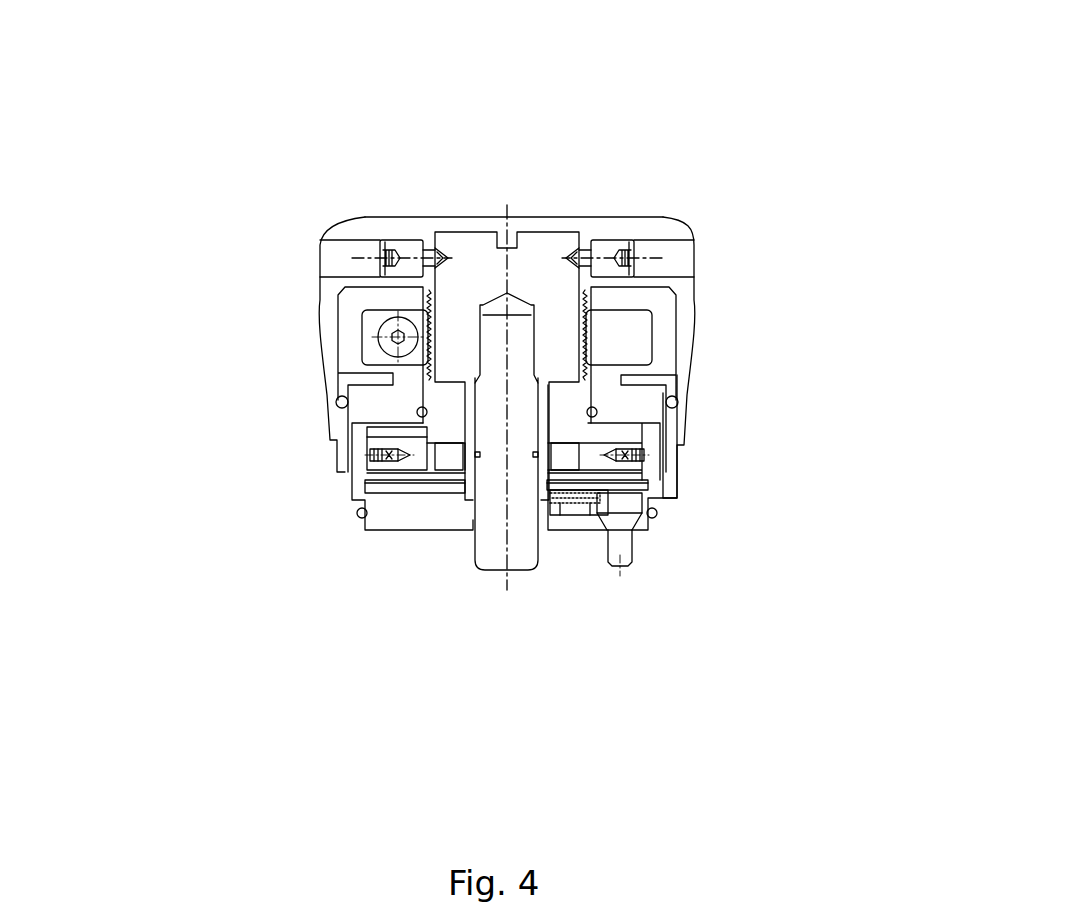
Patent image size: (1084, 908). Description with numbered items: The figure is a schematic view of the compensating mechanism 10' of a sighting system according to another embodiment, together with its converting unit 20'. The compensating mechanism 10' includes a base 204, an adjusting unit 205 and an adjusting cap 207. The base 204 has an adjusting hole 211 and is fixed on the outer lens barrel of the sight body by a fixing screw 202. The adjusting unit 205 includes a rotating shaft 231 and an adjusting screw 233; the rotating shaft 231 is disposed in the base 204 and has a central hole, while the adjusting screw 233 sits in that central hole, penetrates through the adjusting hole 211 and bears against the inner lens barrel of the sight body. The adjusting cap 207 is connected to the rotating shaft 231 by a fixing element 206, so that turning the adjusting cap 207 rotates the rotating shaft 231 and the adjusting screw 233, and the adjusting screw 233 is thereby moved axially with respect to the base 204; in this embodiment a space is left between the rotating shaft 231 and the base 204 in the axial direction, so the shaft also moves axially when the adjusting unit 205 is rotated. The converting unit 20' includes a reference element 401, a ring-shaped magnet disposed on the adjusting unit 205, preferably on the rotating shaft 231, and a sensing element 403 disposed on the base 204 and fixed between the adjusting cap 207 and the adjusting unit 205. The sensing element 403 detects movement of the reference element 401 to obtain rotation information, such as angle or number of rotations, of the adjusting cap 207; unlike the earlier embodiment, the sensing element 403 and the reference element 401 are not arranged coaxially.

The compensating mechanism 10' is at (461, 253).
The fixing element 206 is at (382, 258).
The adjusting cap 207 is at (633, 230).
The base 204 is at (362, 438).
The adjusting unit 205 is at (274, 502).
The rotating shaft 231 is at (420, 462).
The adjusting screw 233 is at (488, 488).
The adjusting hole 211 is at (475, 515).
The converting unit 20' is at (745, 458).
The reference element 401 is at (563, 458).
The sensing element 403 is at (598, 493).
The fixing screw 202 is at (625, 543).